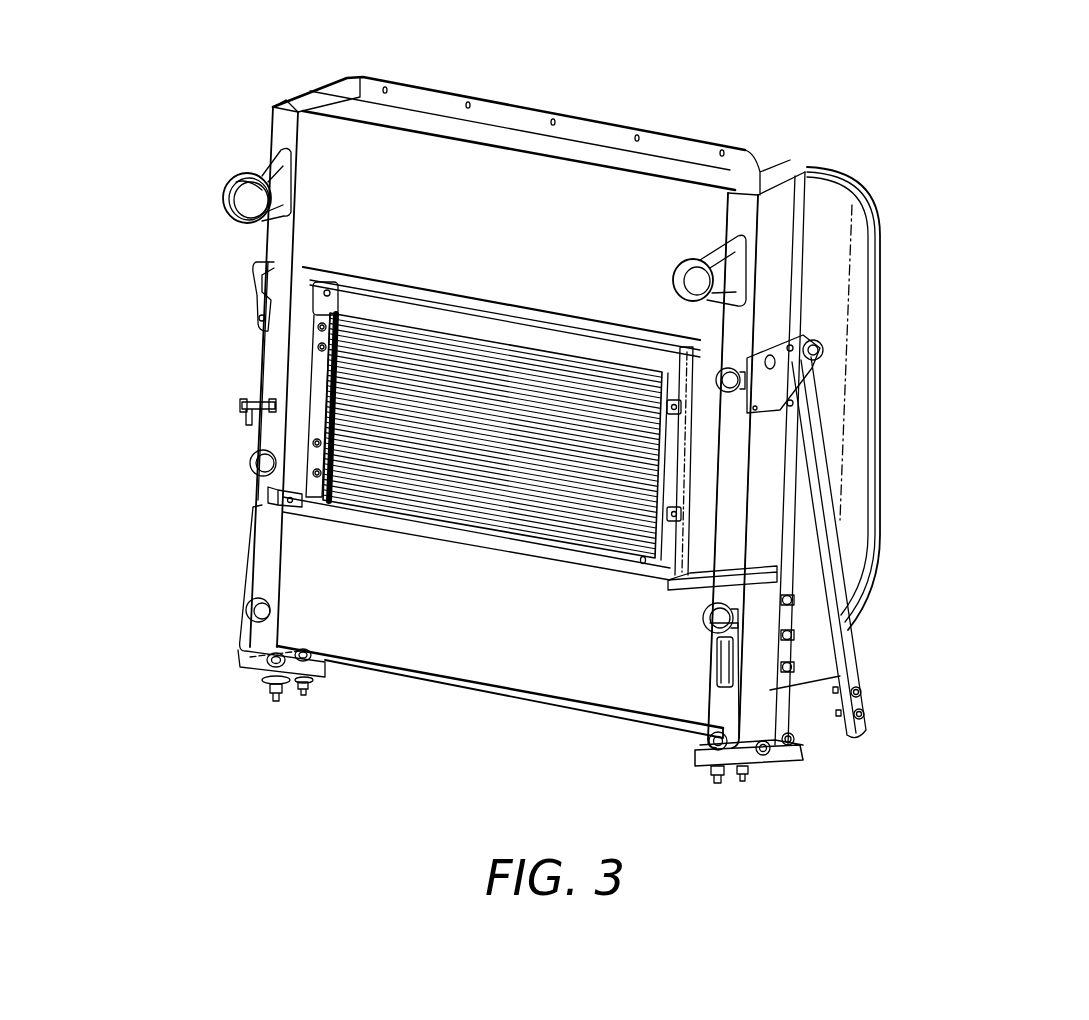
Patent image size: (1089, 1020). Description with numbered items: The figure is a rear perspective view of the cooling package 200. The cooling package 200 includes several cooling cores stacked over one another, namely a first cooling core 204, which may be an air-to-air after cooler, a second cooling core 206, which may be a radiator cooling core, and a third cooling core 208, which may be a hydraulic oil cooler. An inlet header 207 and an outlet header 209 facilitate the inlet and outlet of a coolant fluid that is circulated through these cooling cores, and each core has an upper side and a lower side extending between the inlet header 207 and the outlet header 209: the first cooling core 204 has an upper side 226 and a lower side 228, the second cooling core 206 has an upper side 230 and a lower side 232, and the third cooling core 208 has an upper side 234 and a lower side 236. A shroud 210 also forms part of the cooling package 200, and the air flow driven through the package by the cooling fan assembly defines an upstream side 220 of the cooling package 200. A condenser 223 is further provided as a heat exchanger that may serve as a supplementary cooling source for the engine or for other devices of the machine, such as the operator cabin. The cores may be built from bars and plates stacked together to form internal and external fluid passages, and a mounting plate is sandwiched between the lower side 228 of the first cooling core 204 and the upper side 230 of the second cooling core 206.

The cooling package 200 is at (979, 130).
The first cooling core 204 is at (330, 165).
The second cooling core 206 is at (733, 506).
The inlet header 207 is at (214, 198).
The third cooling core 208 is at (676, 690).
The outlet header 209 is at (683, 272).
The shroud 210 is at (850, 214).
The upstream side 220 is at (251, 487).
The condenser 223 is at (572, 447).
The upper side 226 is at (750, 174).
The lower side 228 is at (297, 279).
The upper side 230 is at (733, 332).
The lower side 232 is at (706, 583).
The upper side 234 is at (710, 562).
The lower side 236 is at (657, 745).